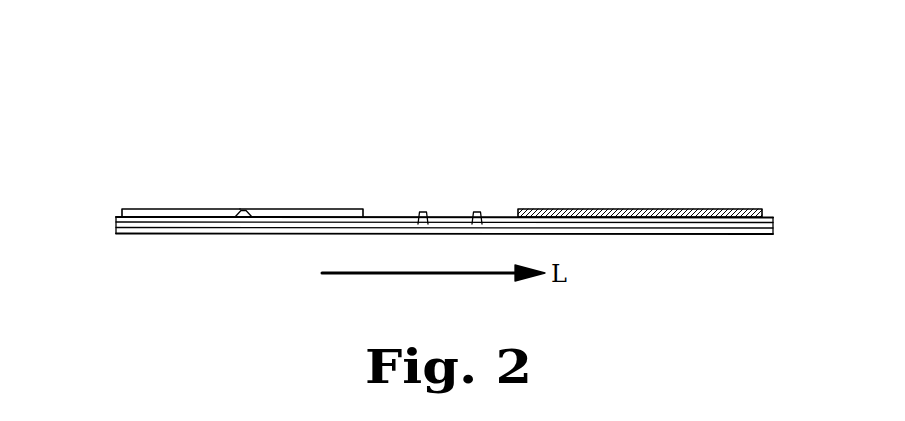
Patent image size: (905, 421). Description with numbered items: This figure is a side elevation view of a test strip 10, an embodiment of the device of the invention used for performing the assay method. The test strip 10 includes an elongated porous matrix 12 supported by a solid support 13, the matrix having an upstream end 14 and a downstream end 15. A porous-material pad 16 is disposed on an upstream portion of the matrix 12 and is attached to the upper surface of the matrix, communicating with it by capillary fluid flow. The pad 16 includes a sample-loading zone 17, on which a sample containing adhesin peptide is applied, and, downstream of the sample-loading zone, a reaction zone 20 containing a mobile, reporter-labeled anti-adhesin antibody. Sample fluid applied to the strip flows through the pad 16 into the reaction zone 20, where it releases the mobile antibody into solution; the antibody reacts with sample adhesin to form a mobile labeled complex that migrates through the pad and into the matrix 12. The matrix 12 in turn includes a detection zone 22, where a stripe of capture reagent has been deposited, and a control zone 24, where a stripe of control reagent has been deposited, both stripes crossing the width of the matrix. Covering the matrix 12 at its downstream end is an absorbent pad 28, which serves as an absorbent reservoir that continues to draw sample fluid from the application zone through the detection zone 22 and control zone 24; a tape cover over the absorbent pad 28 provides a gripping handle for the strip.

The test strip 10 is at (596, 129).
The porous matrix 12 is at (115, 224).
The solid support 13 is at (115, 216).
The upstream end 14 is at (115, 232).
The downstream end 15 is at (775, 224).
The porous-material pad 16 is at (302, 205).
The sample-loading zone 17 is at (178, 205).
The reaction zone 20 is at (243, 208).
The detection zone 22 is at (422, 212).
The control zone 24 is at (476, 212).
The absorbent pad 28 is at (712, 209).